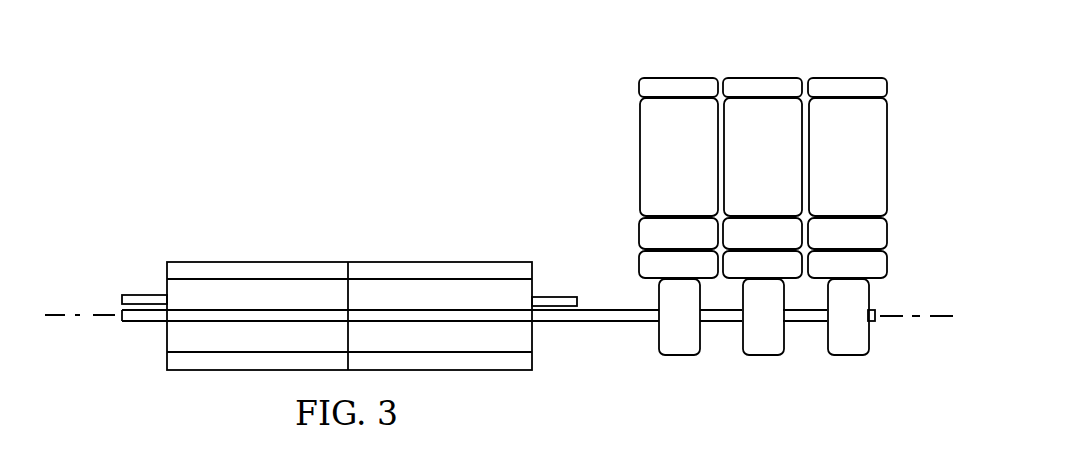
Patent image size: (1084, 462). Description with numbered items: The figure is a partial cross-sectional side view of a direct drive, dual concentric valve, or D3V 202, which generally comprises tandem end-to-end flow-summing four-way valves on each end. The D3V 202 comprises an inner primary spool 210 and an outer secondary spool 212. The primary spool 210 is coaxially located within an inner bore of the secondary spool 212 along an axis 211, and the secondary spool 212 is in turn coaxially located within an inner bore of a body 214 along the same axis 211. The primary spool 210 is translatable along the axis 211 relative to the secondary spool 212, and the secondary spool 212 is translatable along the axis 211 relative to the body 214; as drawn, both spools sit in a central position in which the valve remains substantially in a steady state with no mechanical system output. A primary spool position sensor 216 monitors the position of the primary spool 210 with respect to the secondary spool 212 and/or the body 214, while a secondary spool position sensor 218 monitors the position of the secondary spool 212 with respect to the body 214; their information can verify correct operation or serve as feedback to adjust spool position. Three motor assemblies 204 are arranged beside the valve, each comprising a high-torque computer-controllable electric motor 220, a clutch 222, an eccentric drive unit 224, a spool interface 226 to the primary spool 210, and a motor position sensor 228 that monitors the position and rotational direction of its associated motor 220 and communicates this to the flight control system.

The direct drive, dual concentric valve (D3V) 202 is at (349, 284).
The motor assembly 204 is at (800, 187).
The primary spool 210 is at (255, 308).
The axis 211 is at (79, 318).
The secondary spool 212 is at (395, 290).
The body 214 is at (485, 270).
The primary spool position sensor 216 is at (145, 322).
The secondary spool position sensor 218 is at (145, 293).
The motor 220 is at (878, 155).
The clutch 222 is at (878, 230).
The eccentric drive unit 224 is at (878, 265).
The spool interface 226 is at (868, 333).
The motor position sensor 228 is at (877, 86).